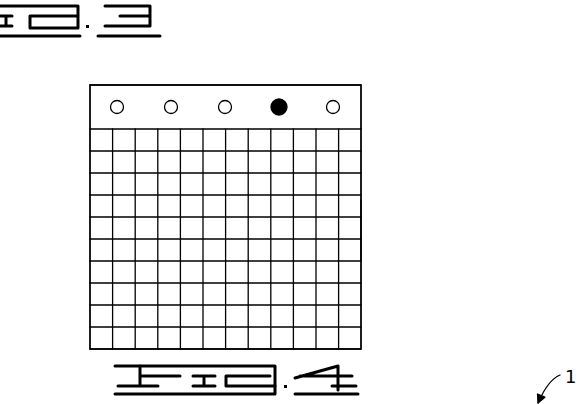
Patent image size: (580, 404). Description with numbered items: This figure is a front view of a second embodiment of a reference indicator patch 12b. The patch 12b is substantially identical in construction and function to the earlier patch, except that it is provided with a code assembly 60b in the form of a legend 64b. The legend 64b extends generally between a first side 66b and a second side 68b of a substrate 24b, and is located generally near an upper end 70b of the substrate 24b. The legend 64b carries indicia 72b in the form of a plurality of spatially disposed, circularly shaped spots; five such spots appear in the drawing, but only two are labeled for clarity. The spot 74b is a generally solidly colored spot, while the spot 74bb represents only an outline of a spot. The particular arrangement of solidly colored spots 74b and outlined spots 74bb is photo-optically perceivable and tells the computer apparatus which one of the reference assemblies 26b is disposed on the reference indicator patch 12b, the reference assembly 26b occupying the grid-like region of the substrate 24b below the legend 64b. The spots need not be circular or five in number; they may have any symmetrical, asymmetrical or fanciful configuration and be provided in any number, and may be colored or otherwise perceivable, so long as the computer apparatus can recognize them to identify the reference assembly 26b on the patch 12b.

The reference indicator patch 12b is at (249, 178).
The code assembly 60b is at (243, 85).
The legend 64b is at (170, 83).
The upper end 70b is at (360, 85).
The indicia 72b is at (110, 107).
The solidly colored spot 74b is at (283, 100).
The outlined spot 74bb is at (340, 112).
The first side 66b is at (90, 205).
The substrate 24b is at (363, 193).
The second side 68b is at (362, 230).
The reference assembly 26b is at (343, 268).